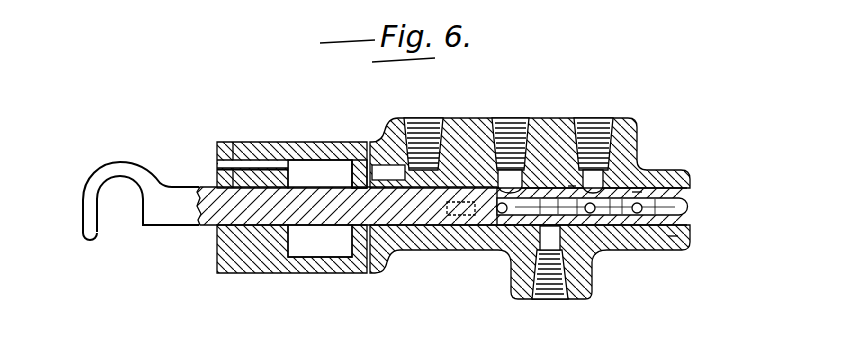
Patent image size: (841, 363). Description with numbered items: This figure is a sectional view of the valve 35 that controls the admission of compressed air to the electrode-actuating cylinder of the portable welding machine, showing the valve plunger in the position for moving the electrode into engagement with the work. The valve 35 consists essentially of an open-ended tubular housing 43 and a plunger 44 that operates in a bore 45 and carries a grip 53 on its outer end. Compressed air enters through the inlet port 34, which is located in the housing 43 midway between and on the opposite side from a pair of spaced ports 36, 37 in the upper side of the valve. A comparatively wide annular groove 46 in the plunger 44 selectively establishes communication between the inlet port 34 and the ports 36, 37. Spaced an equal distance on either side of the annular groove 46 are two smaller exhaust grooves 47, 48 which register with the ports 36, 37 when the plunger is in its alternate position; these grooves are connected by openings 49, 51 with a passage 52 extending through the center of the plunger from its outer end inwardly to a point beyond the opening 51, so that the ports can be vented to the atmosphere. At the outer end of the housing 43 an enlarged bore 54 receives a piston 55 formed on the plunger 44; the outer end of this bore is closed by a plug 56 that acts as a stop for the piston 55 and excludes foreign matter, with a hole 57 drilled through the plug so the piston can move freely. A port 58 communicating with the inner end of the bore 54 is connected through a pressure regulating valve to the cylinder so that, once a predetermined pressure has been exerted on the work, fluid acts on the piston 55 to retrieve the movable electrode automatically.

The inlet port 34 is at (560, 295).
The valve 35 is at (299, 138).
The port 36 is at (603, 118).
The port 37 is at (517, 118).
The tubular housing 43 is at (465, 119).
The plunger 44 is at (428, 217).
The bore 45 is at (688, 200).
The annular groove 46 is at (572, 188).
The exhaust groove 47 is at (637, 192).
The exhaust groove 48 is at (507, 225).
The opening 49 is at (673, 235).
The opening 51 is at (500, 212).
The passage 52 is at (673, 208).
The grip 53 is at (84, 187).
The enlarged bore 54 is at (327, 250).
The piston 55 is at (357, 177).
The plug 56 is at (257, 163).
The hole 57 is at (217, 163).
The port 58 is at (430, 118).